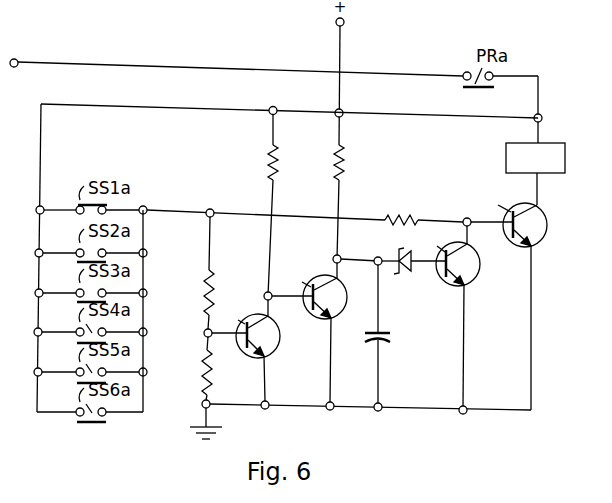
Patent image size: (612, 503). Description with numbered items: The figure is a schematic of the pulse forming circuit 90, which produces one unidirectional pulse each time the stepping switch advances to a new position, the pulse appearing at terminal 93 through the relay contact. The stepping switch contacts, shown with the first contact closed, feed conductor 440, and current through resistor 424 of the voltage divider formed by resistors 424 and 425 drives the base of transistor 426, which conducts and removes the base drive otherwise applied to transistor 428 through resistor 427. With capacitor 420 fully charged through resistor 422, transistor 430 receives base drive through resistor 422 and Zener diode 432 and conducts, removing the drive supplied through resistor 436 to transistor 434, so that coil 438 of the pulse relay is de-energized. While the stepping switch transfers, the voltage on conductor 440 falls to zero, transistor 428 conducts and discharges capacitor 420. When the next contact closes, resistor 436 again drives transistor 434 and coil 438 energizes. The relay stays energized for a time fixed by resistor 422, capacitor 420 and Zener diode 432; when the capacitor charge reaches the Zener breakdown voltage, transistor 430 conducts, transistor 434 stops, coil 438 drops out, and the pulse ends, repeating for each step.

The pulse forming circuit 90 is at (245, 31).
The terminal 93 is at (17, 59).
The capacitor 420 is at (388, 346).
The resistor 422 is at (333, 167).
The resistor 424 is at (203, 303).
The resistor 425 is at (202, 373).
The transistor 426 is at (246, 315).
The resistor 427 is at (267, 167).
The transistor 428 is at (312, 279).
The transistor 430 is at (480, 262).
The Zener diode 432 is at (396, 250).
The transistor 434 is at (547, 222).
The resistor 436 is at (398, 213).
The coil 438 is at (506, 161).
The conductor 440 is at (201, 212).